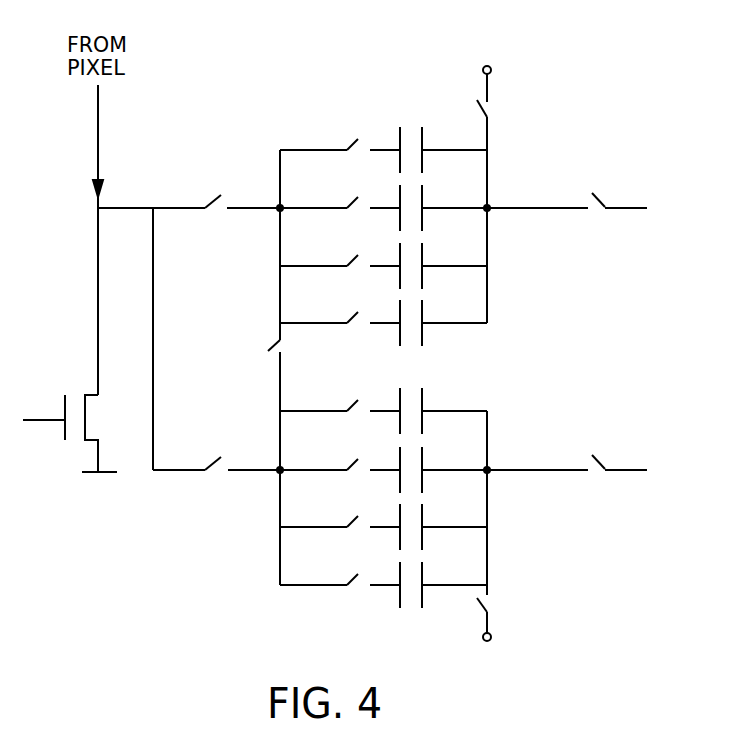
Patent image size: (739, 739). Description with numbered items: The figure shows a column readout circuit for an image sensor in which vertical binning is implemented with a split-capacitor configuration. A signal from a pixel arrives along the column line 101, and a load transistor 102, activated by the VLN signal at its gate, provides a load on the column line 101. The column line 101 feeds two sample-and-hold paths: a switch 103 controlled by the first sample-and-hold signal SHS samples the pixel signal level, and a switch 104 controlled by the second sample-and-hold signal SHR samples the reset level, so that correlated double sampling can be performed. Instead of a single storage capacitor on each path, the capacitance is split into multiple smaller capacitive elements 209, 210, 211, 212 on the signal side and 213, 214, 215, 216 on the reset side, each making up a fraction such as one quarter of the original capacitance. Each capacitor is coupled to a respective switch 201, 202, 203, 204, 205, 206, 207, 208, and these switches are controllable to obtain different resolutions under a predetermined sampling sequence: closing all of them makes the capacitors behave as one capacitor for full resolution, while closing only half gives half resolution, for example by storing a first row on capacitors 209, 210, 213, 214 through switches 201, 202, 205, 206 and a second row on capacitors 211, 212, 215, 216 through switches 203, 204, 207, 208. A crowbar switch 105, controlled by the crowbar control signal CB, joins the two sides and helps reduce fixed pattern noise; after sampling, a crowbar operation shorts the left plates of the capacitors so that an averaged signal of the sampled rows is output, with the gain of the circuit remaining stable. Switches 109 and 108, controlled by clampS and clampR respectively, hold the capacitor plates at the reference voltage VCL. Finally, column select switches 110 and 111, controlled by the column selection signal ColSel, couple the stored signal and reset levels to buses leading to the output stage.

The column line 101 is at (98, 115).
The load transistor 102 is at (73, 446).
The switch 103 is at (216, 217).
The switch 104 is at (218, 456).
The crowbar switch 105 is at (266, 334).
The switch 108 is at (477, 614).
The switch 109 is at (475, 96).
The column select switch 110 is at (592, 213).
The column select switch 111 is at (597, 475).
The switch 201 is at (345, 141).
The switch 202 is at (345, 199).
The switch 203 is at (345, 257).
The switch 204 is at (345, 314).
The switch 205 is at (345, 402).
The switch 206 is at (345, 461).
The switch 207 is at (345, 518).
The switch 208 is at (345, 576).
The capacitive element 209 is at (427, 141).
The capacitive element 210 is at (427, 199).
The capacitive element 211 is at (427, 257).
The capacitive element 212 is at (427, 314).
The capacitive element 213 is at (427, 402).
The capacitive element 214 is at (427, 461).
The capacitive element 215 is at (427, 518).
The capacitive element 216 is at (427, 576).